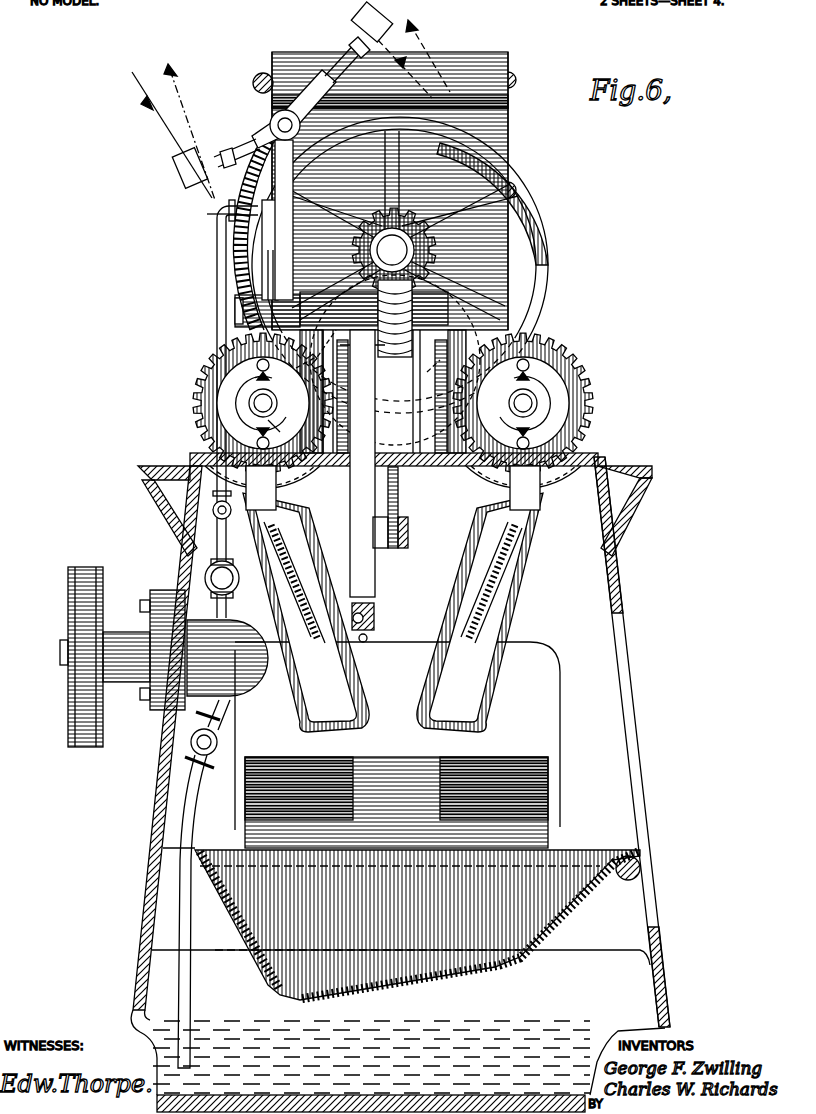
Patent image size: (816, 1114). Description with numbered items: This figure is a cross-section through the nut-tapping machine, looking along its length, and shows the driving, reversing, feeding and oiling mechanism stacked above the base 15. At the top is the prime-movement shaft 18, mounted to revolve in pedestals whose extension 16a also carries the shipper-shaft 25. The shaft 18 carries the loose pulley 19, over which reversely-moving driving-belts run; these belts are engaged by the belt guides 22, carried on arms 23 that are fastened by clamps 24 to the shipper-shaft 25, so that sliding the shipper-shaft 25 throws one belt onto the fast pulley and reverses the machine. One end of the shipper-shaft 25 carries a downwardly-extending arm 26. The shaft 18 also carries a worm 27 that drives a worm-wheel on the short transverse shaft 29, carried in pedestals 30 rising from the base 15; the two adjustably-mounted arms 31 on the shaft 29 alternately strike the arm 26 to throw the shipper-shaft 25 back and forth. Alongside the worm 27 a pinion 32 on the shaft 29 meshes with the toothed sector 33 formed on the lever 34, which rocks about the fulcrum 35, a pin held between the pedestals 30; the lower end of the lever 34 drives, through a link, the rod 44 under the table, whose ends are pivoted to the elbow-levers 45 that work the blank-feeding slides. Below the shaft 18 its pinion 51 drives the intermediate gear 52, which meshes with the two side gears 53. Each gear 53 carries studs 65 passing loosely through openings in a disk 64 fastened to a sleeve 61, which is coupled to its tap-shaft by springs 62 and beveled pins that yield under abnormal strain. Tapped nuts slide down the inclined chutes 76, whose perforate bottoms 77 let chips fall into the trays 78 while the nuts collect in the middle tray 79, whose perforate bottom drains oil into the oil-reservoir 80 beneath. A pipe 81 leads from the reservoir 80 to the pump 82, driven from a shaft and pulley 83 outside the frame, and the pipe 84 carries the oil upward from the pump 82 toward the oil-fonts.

The base 15 is at (614, 572).
The pedestal extension 16a is at (252, 168).
The prime-movement shaft 18 is at (392, 250).
The loose pulley 19 is at (517, 213).
The belt guide 22 is at (374, 21).
The arm 23 is at (342, 48).
The clamp 24 is at (262, 95).
The shipper-shaft 25 is at (300, 108).
The downwardly-extending arm 26 is at (262, 240).
The worm 27 is at (372, 218).
The transverse shaft 29 is at (238, 315).
The pedestal 30 is at (318, 358).
The adjustably-mounted arm 31 is at (270, 278).
The pinion 32 is at (339, 306).
The toothed sector 33 is at (413, 318).
The lever 34 is at (372, 576).
The fulcrum 35 is at (278, 422).
The rod 44 is at (408, 545).
The elbow-lever 45 is at (398, 500).
The pinion 51 is at (412, 215).
The intermediate gear 52 is at (467, 462).
The gear 53 is at (206, 368).
The sleeve 61 is at (252, 406).
The spring 62 is at (284, 414).
The disk 64 is at (222, 400).
The stud 65 is at (257, 367).
The inclined chute 76 is at (527, 585).
The perforate bottom 77 is at (330, 636).
The tray 78 is at (497, 757).
The tray 79 is at (527, 920).
The oil-reservoir 80 is at (371, 1034).
The pipe 81 is at (189, 799).
The pump 82 is at (250, 682).
The pulley 83 is at (100, 723).
The pipe 84 is at (222, 540).